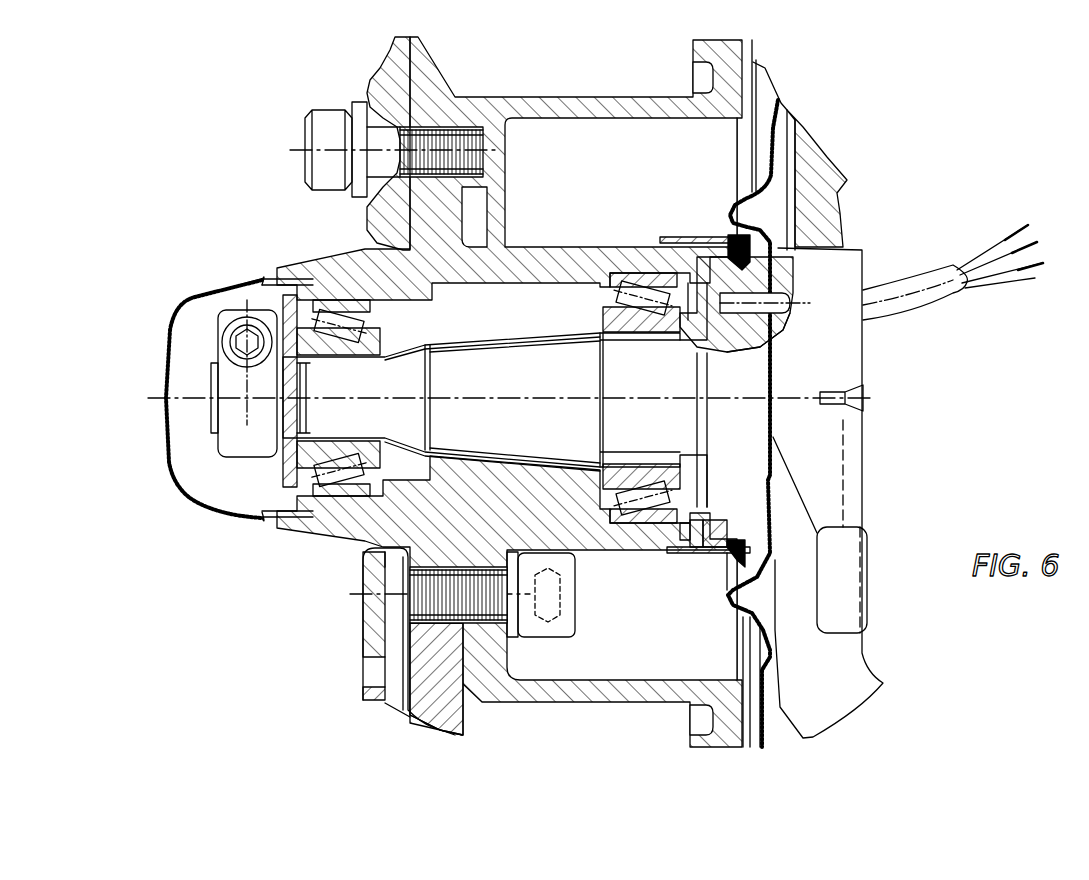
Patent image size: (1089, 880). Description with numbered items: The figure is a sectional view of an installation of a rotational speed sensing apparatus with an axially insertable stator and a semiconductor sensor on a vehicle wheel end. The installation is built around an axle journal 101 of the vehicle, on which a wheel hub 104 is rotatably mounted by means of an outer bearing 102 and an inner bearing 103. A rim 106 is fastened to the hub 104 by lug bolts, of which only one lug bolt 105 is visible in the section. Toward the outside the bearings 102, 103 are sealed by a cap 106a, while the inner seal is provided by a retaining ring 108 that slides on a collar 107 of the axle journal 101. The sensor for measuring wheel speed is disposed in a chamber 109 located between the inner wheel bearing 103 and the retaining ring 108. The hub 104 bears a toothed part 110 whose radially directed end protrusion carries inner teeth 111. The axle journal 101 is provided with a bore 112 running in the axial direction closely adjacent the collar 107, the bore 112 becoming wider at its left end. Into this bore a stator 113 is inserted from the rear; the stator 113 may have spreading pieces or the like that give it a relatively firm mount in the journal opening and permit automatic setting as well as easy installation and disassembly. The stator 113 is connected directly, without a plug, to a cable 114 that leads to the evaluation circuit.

The axle journal 101 is at (536, 365).
The outer bearing 102 is at (332, 472).
The inner bearing 103 is at (612, 580).
The wheel hub 104 is at (363, 268).
The lug bolt 105 is at (325, 138).
The rim 106 is at (383, 75).
The cap 106a is at (180, 472).
The collar 107 is at (720, 518).
The retaining ring 108 is at (772, 252).
The chamber 109 is at (760, 233).
The toothed part 110 is at (690, 527).
The inner teeth 111 is at (695, 530).
The bore 112 is at (783, 322).
The stator 113 is at (792, 307).
The cable 114 is at (947, 273).